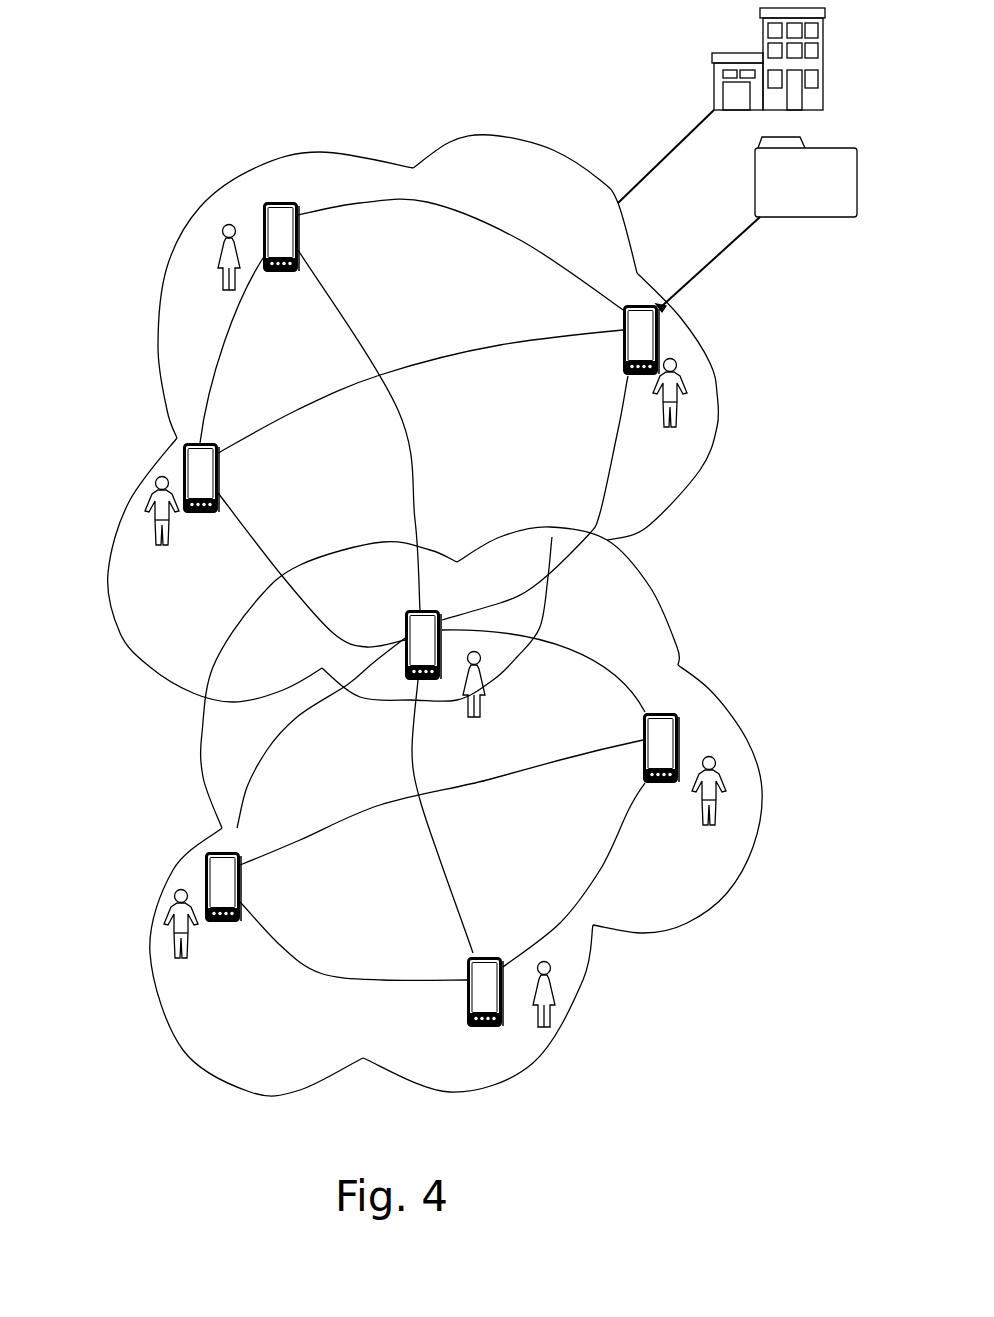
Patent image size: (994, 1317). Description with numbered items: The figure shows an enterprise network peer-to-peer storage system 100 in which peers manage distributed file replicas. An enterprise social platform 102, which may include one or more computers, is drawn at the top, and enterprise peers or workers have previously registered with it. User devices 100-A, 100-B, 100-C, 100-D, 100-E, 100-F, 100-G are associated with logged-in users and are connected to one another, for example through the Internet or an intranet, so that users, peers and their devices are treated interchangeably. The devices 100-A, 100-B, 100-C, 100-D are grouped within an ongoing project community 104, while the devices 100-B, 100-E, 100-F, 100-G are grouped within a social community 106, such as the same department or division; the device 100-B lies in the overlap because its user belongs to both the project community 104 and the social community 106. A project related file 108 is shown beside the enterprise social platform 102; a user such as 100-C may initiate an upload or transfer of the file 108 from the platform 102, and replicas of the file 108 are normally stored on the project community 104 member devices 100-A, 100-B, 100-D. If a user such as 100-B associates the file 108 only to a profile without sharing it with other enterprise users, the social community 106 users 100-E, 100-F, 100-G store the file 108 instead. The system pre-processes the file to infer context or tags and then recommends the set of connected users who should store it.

The peer-to-peer storage system 100 is at (752, 1117).
The user device 100-A is at (202, 512).
The user device 100-B is at (405, 635).
The user device 100-C is at (625, 322).
The user device 100-D is at (300, 227).
The user device 100-E is at (217, 923).
The user device 100-F is at (467, 987).
The user device 100-G is at (643, 726).
The enterprise social platform 102 is at (712, 63).
The project community 104 is at (260, 168).
The social community 106 is at (173, 870).
The file 108 is at (825, 217).